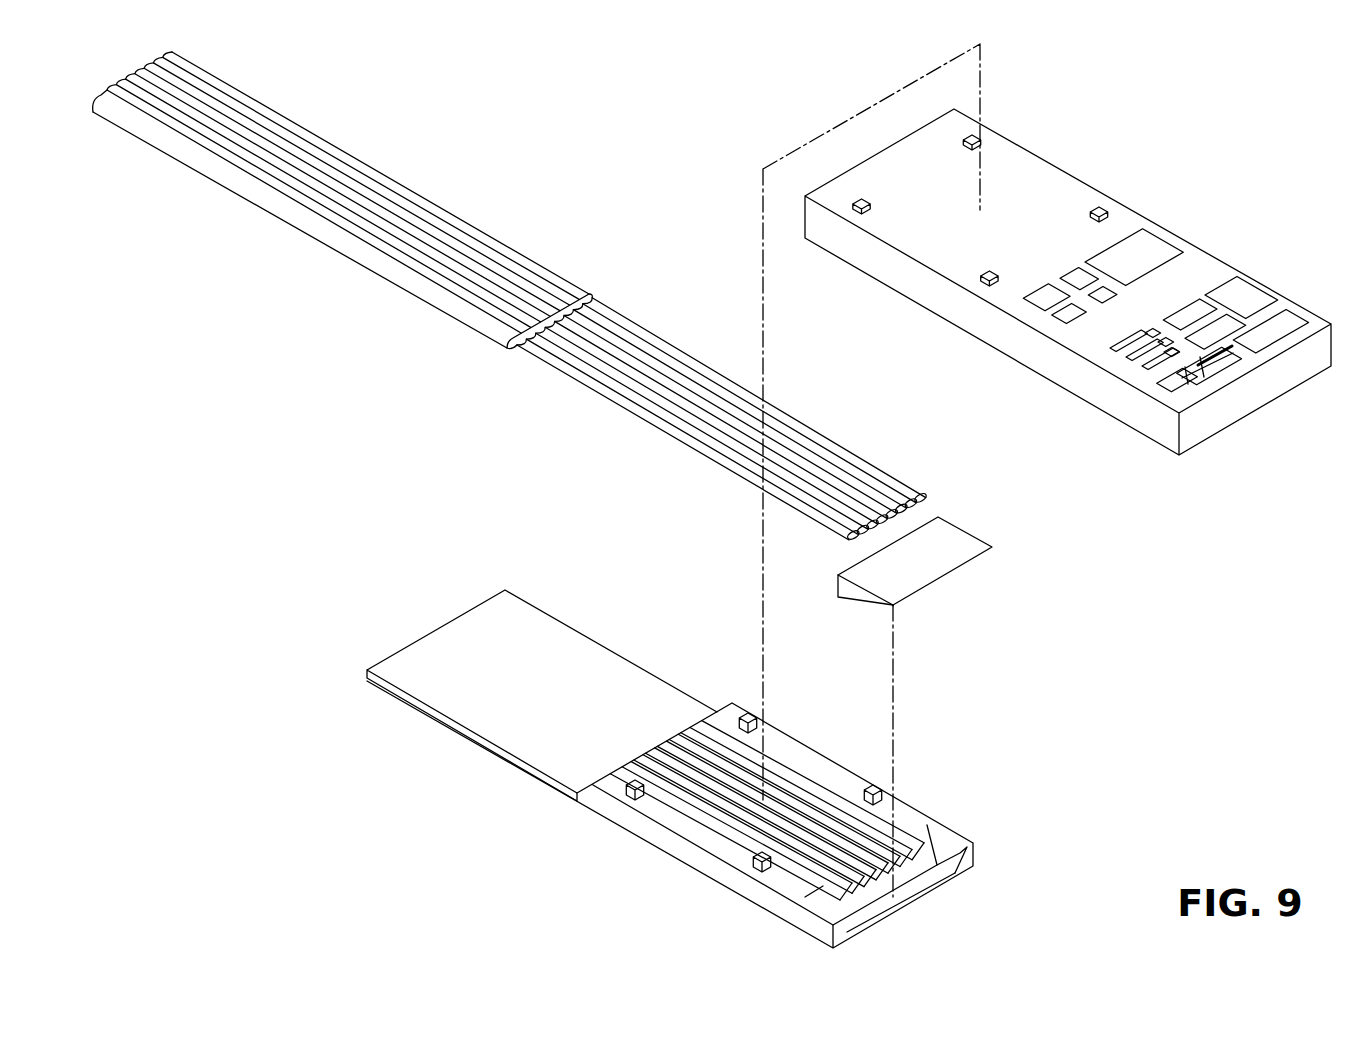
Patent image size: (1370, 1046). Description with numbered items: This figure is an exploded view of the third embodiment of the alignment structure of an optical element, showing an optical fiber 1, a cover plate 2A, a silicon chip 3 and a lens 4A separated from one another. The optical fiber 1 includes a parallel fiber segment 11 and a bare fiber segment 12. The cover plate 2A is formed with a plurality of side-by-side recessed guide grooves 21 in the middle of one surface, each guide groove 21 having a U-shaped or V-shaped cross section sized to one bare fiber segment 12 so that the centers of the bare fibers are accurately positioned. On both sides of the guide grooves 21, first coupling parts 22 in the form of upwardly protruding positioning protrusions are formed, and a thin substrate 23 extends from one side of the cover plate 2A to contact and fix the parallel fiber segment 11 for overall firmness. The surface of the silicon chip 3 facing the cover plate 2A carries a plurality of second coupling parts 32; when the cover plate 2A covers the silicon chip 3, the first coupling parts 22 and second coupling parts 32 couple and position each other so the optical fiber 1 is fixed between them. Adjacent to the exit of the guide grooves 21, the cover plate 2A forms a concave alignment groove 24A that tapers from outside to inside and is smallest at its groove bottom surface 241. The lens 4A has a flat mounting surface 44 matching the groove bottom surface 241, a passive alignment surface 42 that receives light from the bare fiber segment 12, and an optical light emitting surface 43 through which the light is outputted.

The optical fiber 1 is at (510, 296).
The parallel fiber segment 11 is at (480, 332).
The bare fiber segment 12 is at (555, 370).
The silicon chip 3 is at (1061, 260).
The second coupling parts 32 is at (976, 139).
The lens 4A is at (886, 599).
The optical fiber passive alignment surface 42 is at (838, 586).
The optical light emitting surface 43 is at (872, 607).
The mounting surface 44 is at (843, 600).
The cover plate 2A is at (692, 777).
The guide grooves 21 is at (795, 808).
The first coupling parts 22 is at (750, 713).
The thin substrate 23 is at (488, 701).
The alignment groove 24A is at (927, 825).
The groove bottom surface 241 is at (880, 907).